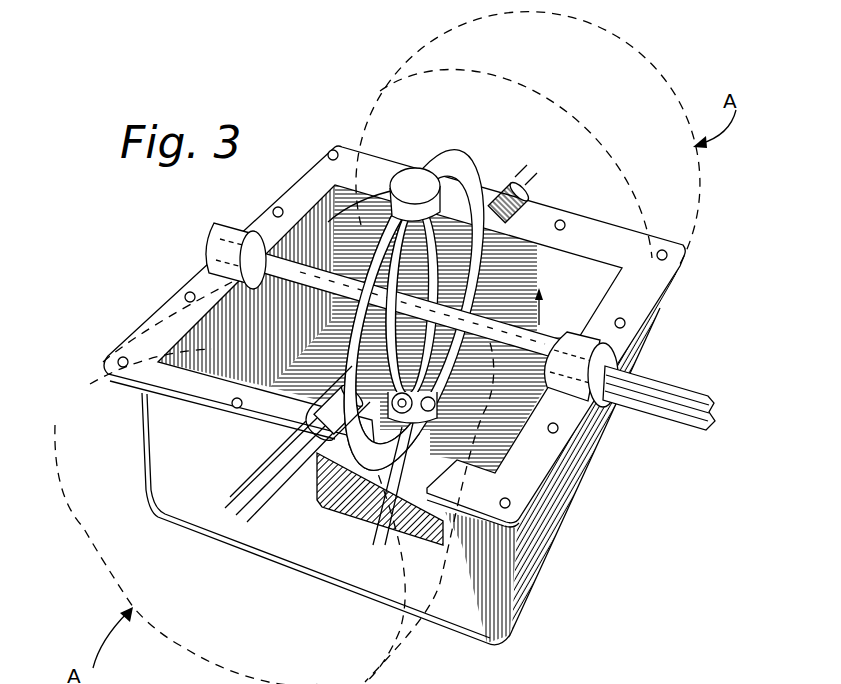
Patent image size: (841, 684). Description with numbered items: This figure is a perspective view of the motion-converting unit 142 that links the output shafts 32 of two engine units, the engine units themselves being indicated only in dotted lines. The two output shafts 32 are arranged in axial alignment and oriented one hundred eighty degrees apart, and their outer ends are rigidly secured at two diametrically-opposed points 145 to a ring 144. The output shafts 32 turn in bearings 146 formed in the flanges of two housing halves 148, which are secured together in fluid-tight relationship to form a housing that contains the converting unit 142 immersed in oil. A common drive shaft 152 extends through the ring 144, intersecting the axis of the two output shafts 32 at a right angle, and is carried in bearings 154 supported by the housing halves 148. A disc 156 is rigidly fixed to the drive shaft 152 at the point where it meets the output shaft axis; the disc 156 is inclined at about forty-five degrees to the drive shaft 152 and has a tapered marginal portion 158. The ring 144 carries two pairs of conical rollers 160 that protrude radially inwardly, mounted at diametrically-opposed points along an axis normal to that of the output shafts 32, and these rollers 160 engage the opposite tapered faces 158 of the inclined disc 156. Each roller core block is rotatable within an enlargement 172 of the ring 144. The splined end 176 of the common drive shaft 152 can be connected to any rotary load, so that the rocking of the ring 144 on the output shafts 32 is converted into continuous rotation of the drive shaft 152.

The output shaft 32 is at (512, 190).
The motion-converting unit 142 is at (660, 320).
The ring 144 is at (458, 175).
The securing points 145 is at (510, 230).
The bearings 146 is at (325, 418).
The housing halves 148 is at (583, 478).
The common drive shaft 152 is at (632, 398).
The bearings 154 is at (228, 246).
The disc 156 is at (385, 262).
The tapered marginal portion 158 is at (437, 284).
The rollers 160 is at (376, 536).
The enlargement 172 is at (415, 182).
The splined end 176 is at (700, 400).